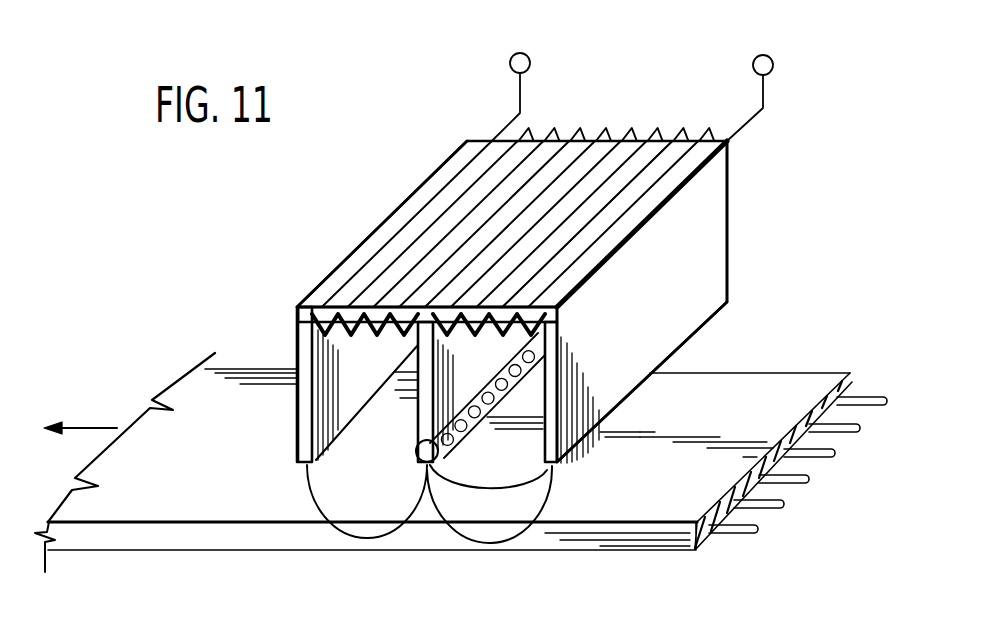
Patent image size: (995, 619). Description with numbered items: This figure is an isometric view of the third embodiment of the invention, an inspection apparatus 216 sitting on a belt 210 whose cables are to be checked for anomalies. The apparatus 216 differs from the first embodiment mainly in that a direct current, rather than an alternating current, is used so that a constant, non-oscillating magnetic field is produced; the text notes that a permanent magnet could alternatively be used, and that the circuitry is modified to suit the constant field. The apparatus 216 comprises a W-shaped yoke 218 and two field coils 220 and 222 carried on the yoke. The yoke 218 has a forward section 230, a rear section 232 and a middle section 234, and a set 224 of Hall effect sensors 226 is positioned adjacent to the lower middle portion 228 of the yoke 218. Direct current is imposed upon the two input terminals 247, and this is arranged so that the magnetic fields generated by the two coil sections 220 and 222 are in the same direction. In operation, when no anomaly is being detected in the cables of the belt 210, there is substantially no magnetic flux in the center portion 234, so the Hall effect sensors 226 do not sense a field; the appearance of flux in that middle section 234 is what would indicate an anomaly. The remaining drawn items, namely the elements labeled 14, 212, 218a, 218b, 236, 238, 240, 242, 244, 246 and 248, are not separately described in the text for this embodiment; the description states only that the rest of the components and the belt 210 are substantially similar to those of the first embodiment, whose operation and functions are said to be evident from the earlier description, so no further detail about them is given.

The pins 14 is at (757, 532).
The belt 210 is at (804, 366).
The board top surface 212 is at (817, 380).
The apparatus 216 is at (643, 97).
The yoke 218 is at (707, 237).
The housing left portion 218a is at (382, 233).
The housing right portion 218b is at (610, 215).
The field coil 220 is at (410, 220).
The field coil 222 is at (618, 220).
The set of Hall effect sensors 224 is at (547, 470).
The Hall effect sensor 226 is at (514, 410).
The lower middle portion 228 is at (300, 417).
The forward section 230 is at (400, 380).
The rear section 232 is at (703, 297).
The middle section 234 is at (423, 352).
The direction arrow 236 is at (92, 428).
The serrations 238 is at (583, 147).
The bottom edge 240 is at (680, 348).
The board region 242 is at (683, 477).
The top edge rib 244 is at (452, 163).
The top right edge 246 is at (693, 160).
The input terminal 247 is at (510, 64).
The ball contact 248 is at (415, 447).